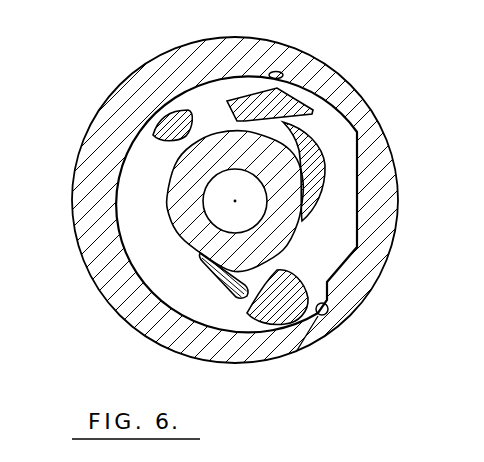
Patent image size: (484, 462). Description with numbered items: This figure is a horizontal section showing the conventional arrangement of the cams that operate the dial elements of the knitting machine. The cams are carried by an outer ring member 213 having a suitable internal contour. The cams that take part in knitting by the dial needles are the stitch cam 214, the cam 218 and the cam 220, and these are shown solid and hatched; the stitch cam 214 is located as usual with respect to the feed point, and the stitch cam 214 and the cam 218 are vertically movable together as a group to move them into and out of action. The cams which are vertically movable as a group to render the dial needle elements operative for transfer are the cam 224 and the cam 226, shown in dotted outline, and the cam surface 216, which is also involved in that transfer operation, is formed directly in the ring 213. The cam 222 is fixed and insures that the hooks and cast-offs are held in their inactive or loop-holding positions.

The outer ring member 213 is at (73, 193).
The stitch cam 214 is at (228, 100).
The cam surface 216 is at (328, 312).
The cam 218 is at (326, 172).
The cam 220 is at (283, 72).
The cam 222 is at (161, 140).
The cam 224 is at (200, 257).
The cam 226 is at (290, 325).